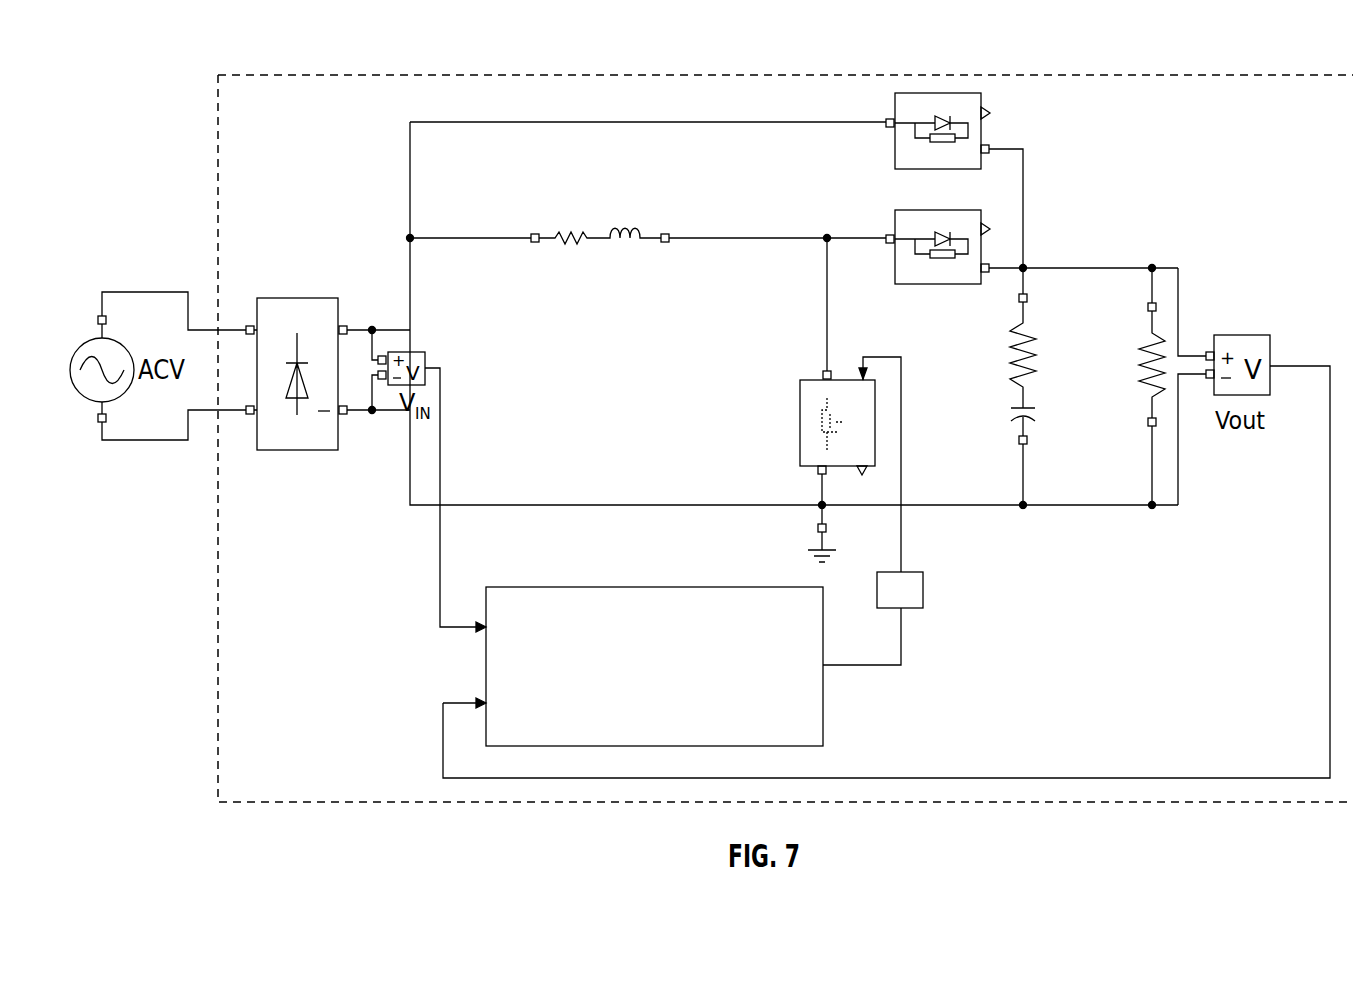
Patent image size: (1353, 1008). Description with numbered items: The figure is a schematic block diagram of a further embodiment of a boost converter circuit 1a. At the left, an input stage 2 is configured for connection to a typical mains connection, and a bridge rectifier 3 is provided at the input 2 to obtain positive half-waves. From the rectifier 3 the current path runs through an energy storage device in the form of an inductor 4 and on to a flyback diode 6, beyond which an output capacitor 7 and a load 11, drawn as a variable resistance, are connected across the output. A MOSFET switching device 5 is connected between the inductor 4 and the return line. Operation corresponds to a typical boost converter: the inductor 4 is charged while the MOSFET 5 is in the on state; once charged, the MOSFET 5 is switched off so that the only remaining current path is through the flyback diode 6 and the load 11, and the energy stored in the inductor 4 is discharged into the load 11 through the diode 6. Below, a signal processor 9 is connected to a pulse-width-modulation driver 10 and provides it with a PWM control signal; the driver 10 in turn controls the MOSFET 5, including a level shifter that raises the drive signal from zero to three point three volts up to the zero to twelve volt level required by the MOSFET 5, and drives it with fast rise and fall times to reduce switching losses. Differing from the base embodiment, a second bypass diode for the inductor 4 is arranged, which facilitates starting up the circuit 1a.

The boost converter circuit 1a is at (218, 188).
The input stage 2 is at (241, 545).
The bridge rectifier 3 is at (299, 298).
The inductor 4 is at (618, 232).
The MOSFET switching device 5 is at (803, 380).
The flyback diode 6 is at (975, 210).
The output capacitor 7 is at (1034, 404).
The signal processor 9 is at (668, 587).
The pulse-width-modulation (PWM) driver 10 is at (905, 572).
The load 11 is at (1140, 334).